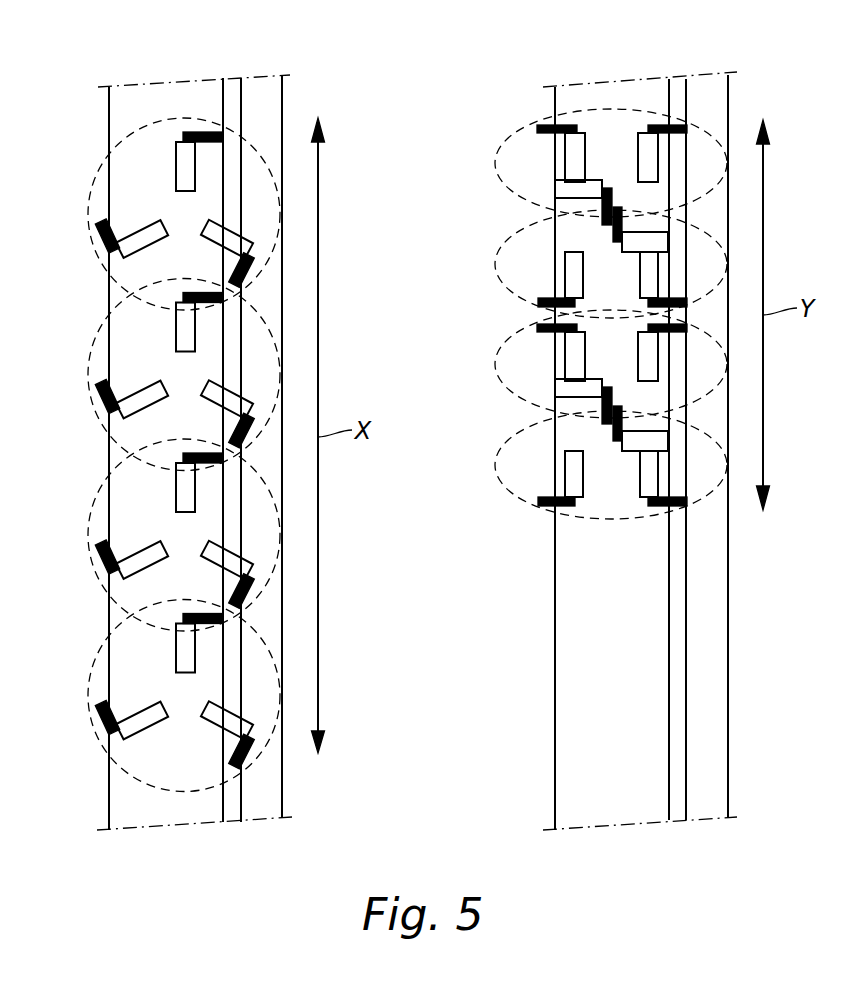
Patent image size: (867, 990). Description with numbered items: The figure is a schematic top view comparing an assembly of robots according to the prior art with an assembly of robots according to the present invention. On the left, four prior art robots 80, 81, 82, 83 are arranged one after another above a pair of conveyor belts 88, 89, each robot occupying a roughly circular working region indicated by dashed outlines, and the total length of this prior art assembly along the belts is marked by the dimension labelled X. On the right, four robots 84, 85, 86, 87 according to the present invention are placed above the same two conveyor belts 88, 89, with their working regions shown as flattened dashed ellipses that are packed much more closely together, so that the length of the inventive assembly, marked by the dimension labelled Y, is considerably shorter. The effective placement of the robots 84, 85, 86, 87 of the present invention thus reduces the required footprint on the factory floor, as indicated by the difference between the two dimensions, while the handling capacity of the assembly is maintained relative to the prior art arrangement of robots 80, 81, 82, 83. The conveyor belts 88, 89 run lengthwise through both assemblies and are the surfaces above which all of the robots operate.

The robot 80 is at (138, 197).
The robot 81 is at (157, 375).
The robot 82 is at (157, 535).
The robot 83 is at (157, 696).
The robot 84 is at (507, 165).
The robot 85 is at (507, 263).
The robot 86 is at (581, 380).
The robot 87 is at (581, 465).
The conveyor belt 88 is at (177, 97).
The conveyor belt 89 is at (262, 97).